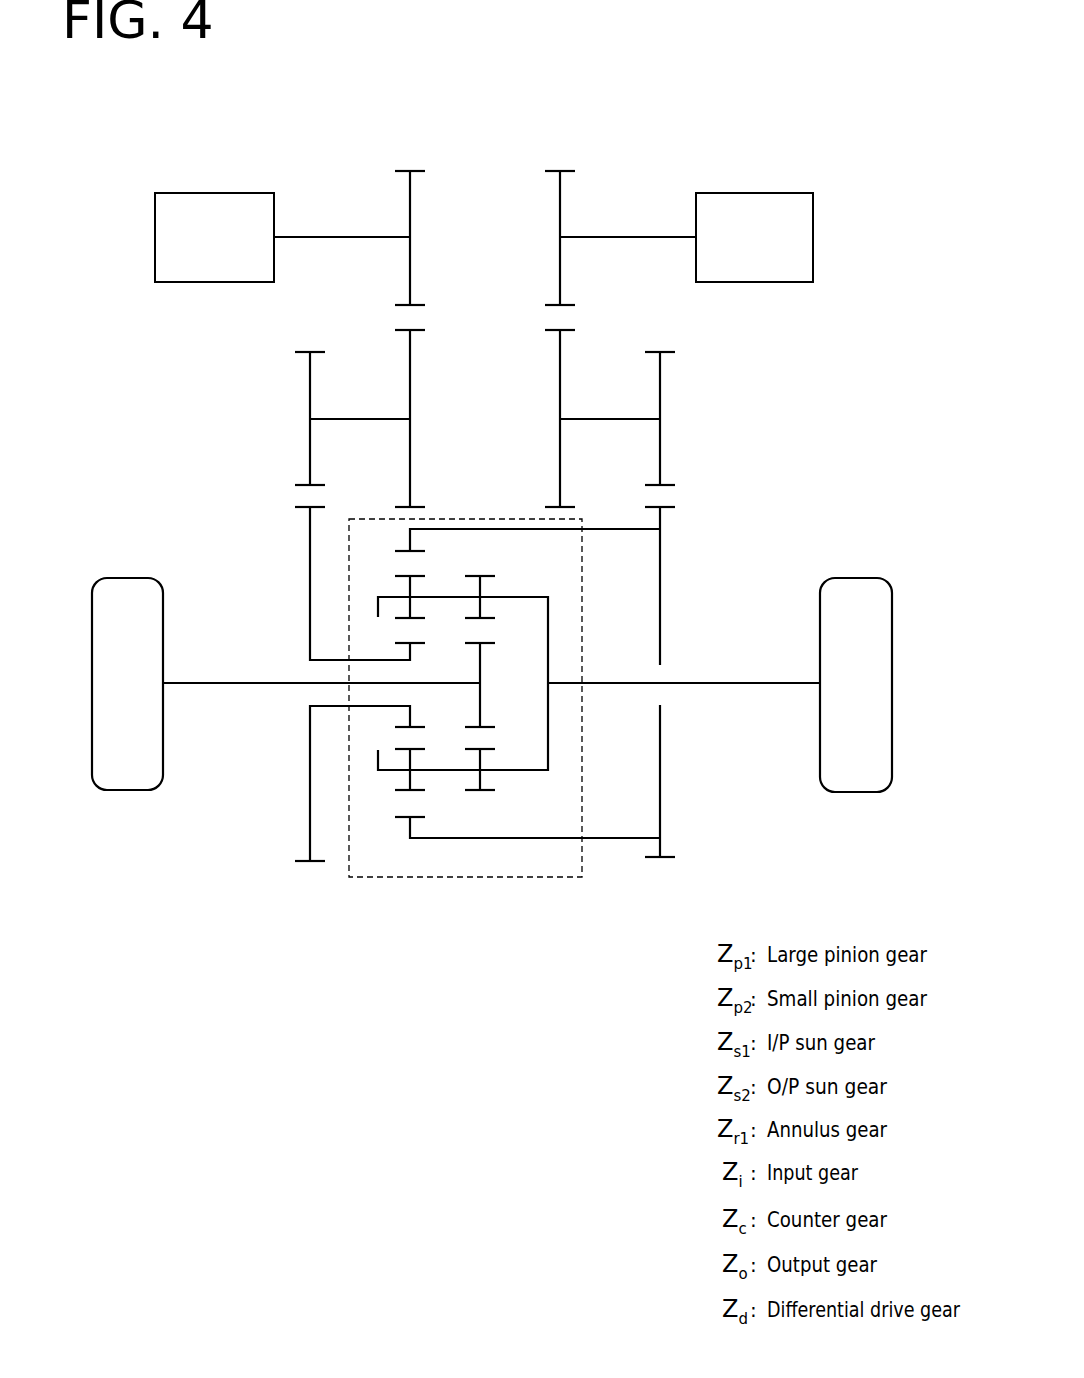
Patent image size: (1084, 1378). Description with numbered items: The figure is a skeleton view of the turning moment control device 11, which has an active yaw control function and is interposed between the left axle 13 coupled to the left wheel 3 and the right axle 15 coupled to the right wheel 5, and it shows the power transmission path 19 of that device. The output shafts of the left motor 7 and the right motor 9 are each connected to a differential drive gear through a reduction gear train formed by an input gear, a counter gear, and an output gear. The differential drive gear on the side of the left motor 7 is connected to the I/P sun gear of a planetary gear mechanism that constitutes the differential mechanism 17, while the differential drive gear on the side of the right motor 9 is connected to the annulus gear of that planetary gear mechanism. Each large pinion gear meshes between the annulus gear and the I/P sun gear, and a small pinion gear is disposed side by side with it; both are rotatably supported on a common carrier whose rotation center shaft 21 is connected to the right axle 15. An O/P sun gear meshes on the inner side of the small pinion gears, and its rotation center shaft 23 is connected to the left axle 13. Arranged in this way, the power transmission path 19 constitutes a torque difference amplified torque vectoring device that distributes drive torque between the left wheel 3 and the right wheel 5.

The left wheel 3 is at (92, 690).
The right wheel 5 is at (892, 683).
The left motor 7 is at (155, 240).
The right motor 9 is at (813, 237).
The turning moment control device 11 is at (515, 145).
The left axle 13 is at (232, 686).
The right axle 15 is at (760, 686).
The differential mechanism 17 is at (538, 878).
The power transmission path 19 is at (195, 473).
The rotation center shaft of the carrier 21 is at (621, 686).
The rotation center shaft of the O/P sun gear 23 is at (445, 685).